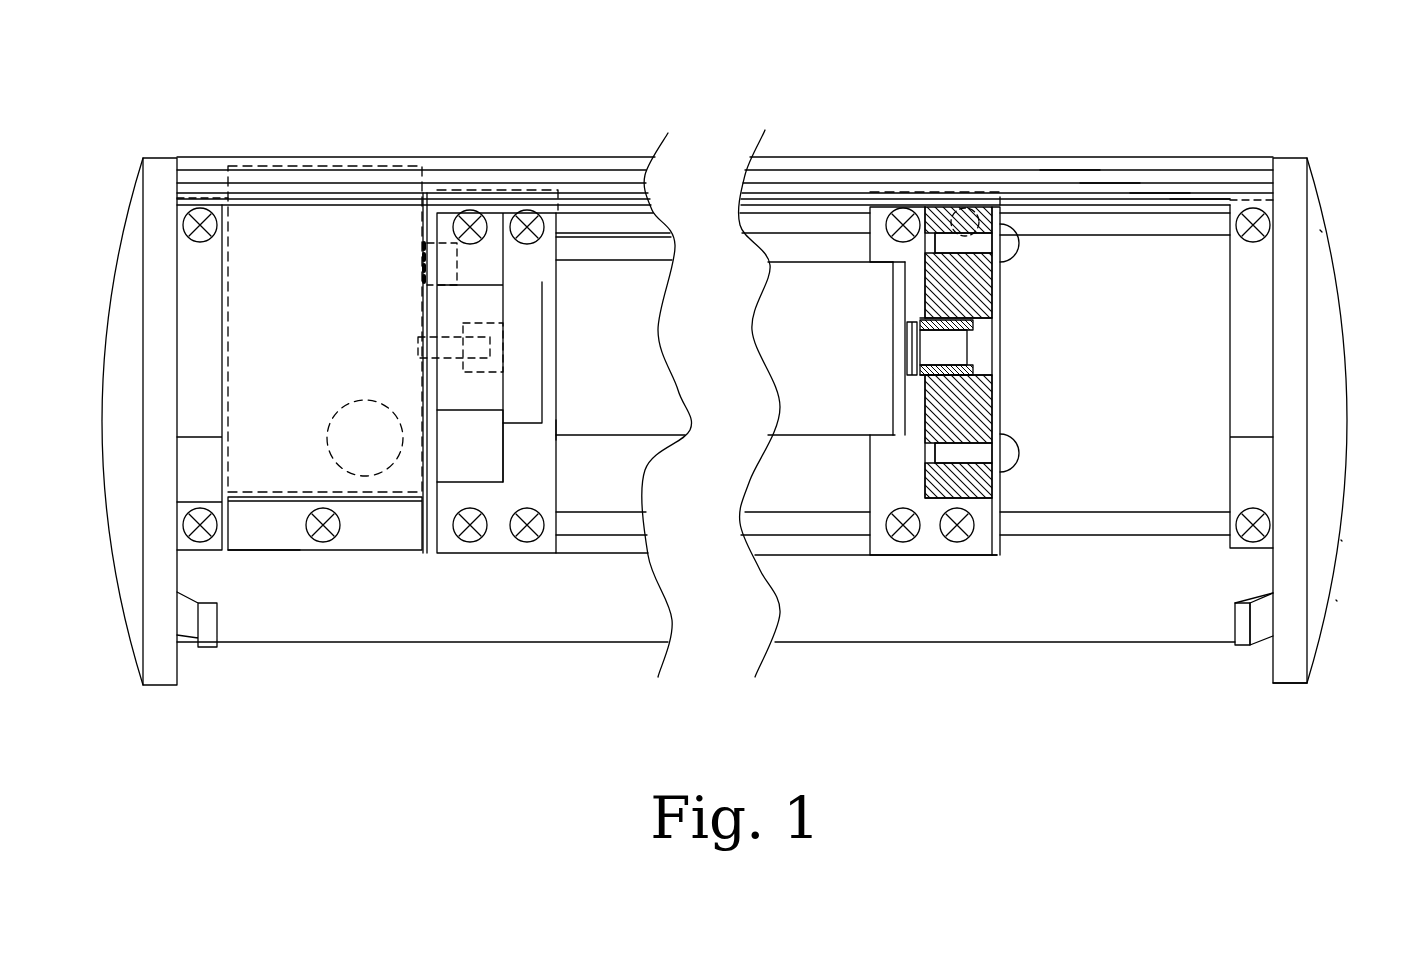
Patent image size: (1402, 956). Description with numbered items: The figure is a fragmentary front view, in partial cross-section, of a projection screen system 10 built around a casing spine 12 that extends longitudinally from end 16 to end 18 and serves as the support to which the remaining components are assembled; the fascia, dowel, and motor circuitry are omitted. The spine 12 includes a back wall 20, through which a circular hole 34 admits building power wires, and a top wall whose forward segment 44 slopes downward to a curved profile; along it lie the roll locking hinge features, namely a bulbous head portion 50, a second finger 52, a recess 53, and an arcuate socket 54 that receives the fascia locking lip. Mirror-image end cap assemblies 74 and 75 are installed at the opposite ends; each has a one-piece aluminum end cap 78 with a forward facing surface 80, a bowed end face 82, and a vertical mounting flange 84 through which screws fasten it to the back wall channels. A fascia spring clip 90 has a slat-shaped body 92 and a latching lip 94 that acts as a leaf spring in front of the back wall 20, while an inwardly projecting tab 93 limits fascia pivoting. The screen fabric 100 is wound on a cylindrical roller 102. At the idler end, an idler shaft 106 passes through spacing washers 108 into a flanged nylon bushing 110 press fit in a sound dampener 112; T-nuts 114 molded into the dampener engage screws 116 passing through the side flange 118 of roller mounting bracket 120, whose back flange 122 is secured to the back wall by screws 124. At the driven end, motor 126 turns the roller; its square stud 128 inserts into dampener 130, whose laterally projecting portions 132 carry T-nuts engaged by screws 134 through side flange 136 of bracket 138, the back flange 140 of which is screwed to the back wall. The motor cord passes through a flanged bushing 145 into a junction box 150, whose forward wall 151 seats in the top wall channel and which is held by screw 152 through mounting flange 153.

The projection screen system 10 is at (953, 682).
The casing spine 12 is at (610, 648).
The end of spine 16 is at (175, 176).
The end of spine 18 is at (1278, 178).
The back wall 20 is at (1112, 632).
The circular hole 34 is at (336, 406).
The top wall segment 44 is at (1010, 163).
The bulbous head portion 50 is at (1105, 190).
The second finger 52 is at (1200, 205).
The recess 53 is at (1060, 180).
The arcuate socket 54 is at (1153, 198).
The end cap assembly 74 is at (124, 626).
The end cap assembly 75 is at (1336, 600).
The end cap 78 is at (1341, 540).
The forward facing surface 80 is at (1290, 684).
The bowed end face 82 is at (1325, 268).
The vertical mounting flange 84 is at (1247, 291).
The fascia spring clip 90 is at (1232, 596).
The clip body 92 is at (1265, 637).
The tab 93 is at (207, 474).
The latching lip 94 is at (1240, 630).
The fabric sheet 100 is at (640, 422).
The roller 102 is at (555, 436).
The idler shaft 106 is at (958, 348).
The spacing washers 108 is at (908, 386).
The flanged nylon bushing 110 is at (977, 371).
The sound dampener 112 is at (988, 300).
The T-nuts 114 is at (1000, 258).
The screws 116 is at (1011, 242).
The side flange 118 is at (999, 545).
The roller mounting bracket 120 is at (968, 563).
The back flange 122 is at (935, 546).
The screws 124 is at (902, 210).
The motor 126 is at (543, 258).
The square stud 128 is at (477, 322).
The dampener 130 is at (440, 220).
The laterally projecting portions 132 is at (450, 400).
The screws 134 is at (417, 340).
The side flange 136 is at (437, 556).
The roller mounting bracket 138 is at (500, 562).
The back flange 140 is at (545, 551).
The flanged bushing 145 is at (420, 262).
The junction box 150 is at (276, 558).
The forward wall 151 is at (325, 329).
The screw 152 is at (325, 537).
The mounting flange 153 is at (255, 540).